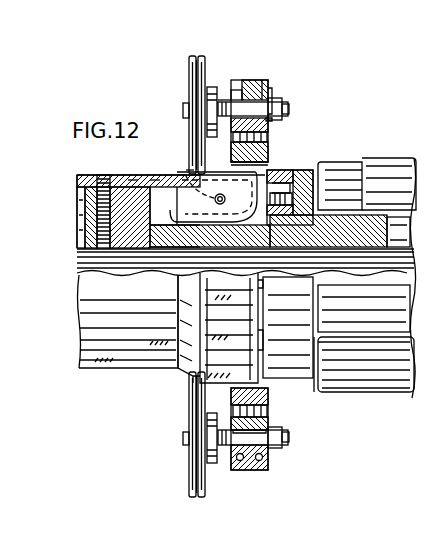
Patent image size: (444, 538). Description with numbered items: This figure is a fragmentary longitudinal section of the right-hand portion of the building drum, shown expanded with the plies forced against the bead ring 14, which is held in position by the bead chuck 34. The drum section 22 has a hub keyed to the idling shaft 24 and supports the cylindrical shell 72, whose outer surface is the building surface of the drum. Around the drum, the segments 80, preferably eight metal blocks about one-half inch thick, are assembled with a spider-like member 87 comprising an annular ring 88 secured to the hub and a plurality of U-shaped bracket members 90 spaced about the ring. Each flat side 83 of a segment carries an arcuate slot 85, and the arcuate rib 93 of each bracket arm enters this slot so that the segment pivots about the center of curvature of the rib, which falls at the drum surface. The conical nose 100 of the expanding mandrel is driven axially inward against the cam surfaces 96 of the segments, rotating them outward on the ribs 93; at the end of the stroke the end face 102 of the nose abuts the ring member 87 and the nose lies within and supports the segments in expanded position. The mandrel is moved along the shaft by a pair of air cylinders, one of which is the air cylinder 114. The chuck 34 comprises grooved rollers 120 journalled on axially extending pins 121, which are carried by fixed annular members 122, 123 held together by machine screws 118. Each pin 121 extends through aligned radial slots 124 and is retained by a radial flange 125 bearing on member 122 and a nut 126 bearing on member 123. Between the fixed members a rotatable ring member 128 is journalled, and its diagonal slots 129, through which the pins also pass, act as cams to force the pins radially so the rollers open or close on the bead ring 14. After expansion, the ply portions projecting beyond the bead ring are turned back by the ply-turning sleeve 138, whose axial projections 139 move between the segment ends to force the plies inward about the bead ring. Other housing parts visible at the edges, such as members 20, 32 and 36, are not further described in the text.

The bead ring 14 is at (178, 372).
The housing member 20 is at (427, 278).
The drum section 22 is at (85, 377).
The idling shaft 24 is at (395, 262).
The sleeve 32 is at (288, 387).
The chuck 34 is at (268, 93).
The outer housing 36 is at (378, 400).
The cylindrical shell 72 is at (77, 180).
The segment 80 is at (222, 222).
The flat side 83 is at (265, 171).
The arcuate slot 85 is at (201, 182).
The spider-like member 87 is at (133, 180).
The annular ring 88 is at (155, 180).
The bracket member 90 is at (182, 176).
The arcuate rib 93 is at (190, 172).
The cam surface 96 is at (232, 215).
The conical nose 100 is at (178, 242).
The end face 102 is at (160, 240).
The air cylinder 114 is at (395, 236).
The machine screw 118 is at (268, 137).
The grooved roller 120 is at (190, 90).
The pin 121 is at (290, 109).
The fixed annular member 122 is at (236, 90).
The fixed annular member 123 is at (266, 85).
The radial slot 124 is at (249, 463).
The radial flange 125 is at (220, 100).
The nut 126 is at (284, 118).
The rotatable ring member 128 is at (250, 80).
The diagonal slot 129 is at (270, 457).
The ply-turning sleeve 138 is at (392, 396).
The axial projection 139 is at (368, 158).